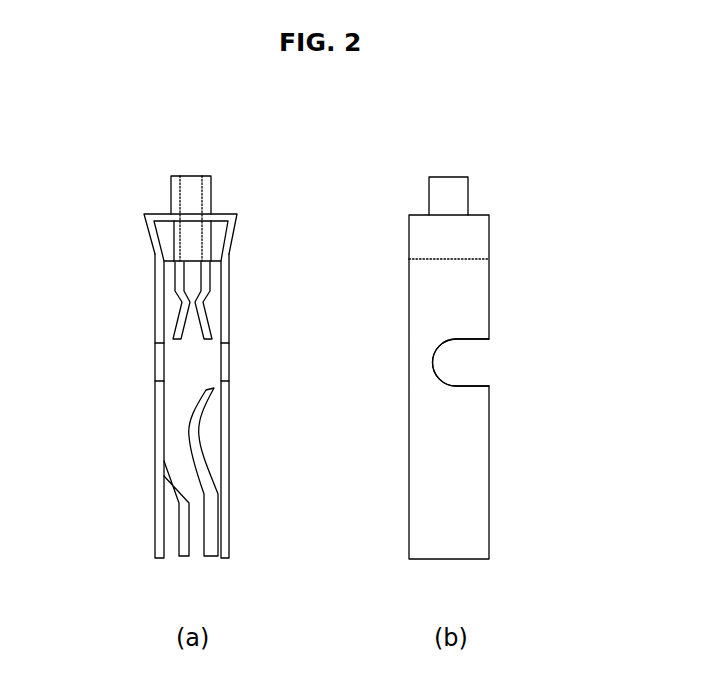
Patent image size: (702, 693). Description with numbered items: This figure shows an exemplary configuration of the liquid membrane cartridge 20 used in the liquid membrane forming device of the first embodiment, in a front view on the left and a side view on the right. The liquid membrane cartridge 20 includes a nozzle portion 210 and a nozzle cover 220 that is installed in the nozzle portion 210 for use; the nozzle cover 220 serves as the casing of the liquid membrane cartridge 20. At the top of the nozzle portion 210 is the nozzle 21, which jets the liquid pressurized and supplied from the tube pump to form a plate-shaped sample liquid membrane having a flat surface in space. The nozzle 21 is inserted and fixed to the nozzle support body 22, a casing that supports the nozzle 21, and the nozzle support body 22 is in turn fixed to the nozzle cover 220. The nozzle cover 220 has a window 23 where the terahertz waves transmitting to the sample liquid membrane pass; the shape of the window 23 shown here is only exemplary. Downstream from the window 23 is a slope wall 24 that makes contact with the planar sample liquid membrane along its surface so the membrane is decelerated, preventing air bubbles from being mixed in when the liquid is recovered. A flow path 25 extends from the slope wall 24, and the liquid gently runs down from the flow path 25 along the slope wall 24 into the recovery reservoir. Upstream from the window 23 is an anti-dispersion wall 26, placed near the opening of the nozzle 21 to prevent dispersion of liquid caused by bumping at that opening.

The liquid membrane cartridge 20 is at (210, 123).
The nozzle portion 210 is at (218, 181).
The nozzle 21 is at (170, 186).
The nozzle support body 22 is at (211, 201).
The nozzle cover 220 is at (132, 273).
The window 23 is at (154, 360).
The slope wall 24 is at (198, 447).
The flow path 25 is at (192, 538).
The anti-dispersion wall 26 is at (207, 323).